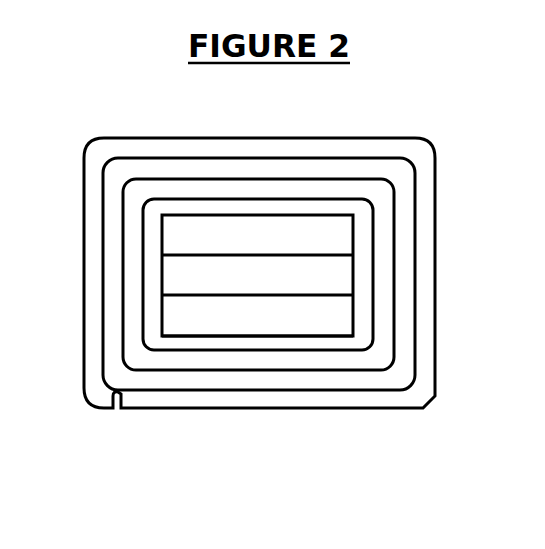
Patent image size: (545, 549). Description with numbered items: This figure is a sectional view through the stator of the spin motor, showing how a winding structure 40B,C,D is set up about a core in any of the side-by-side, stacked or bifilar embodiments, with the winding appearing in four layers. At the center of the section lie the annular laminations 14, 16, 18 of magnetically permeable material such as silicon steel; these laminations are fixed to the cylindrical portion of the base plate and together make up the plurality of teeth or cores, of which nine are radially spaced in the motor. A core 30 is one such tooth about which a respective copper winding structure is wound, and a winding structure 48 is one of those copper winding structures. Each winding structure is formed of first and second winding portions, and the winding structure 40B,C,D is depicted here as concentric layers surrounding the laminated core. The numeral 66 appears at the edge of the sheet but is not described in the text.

The annular lamination 14 is at (292, 230).
The annular lamination 16 is at (257, 279).
The annular lamination 18 is at (258, 315).
The core 30 is at (168, 337).
The winding structure 48 is at (412, 389).
The winding structure 40B,C,D is at (456, 184).
The reference label (cut off at sheet edge) 66 is at (10, 97).